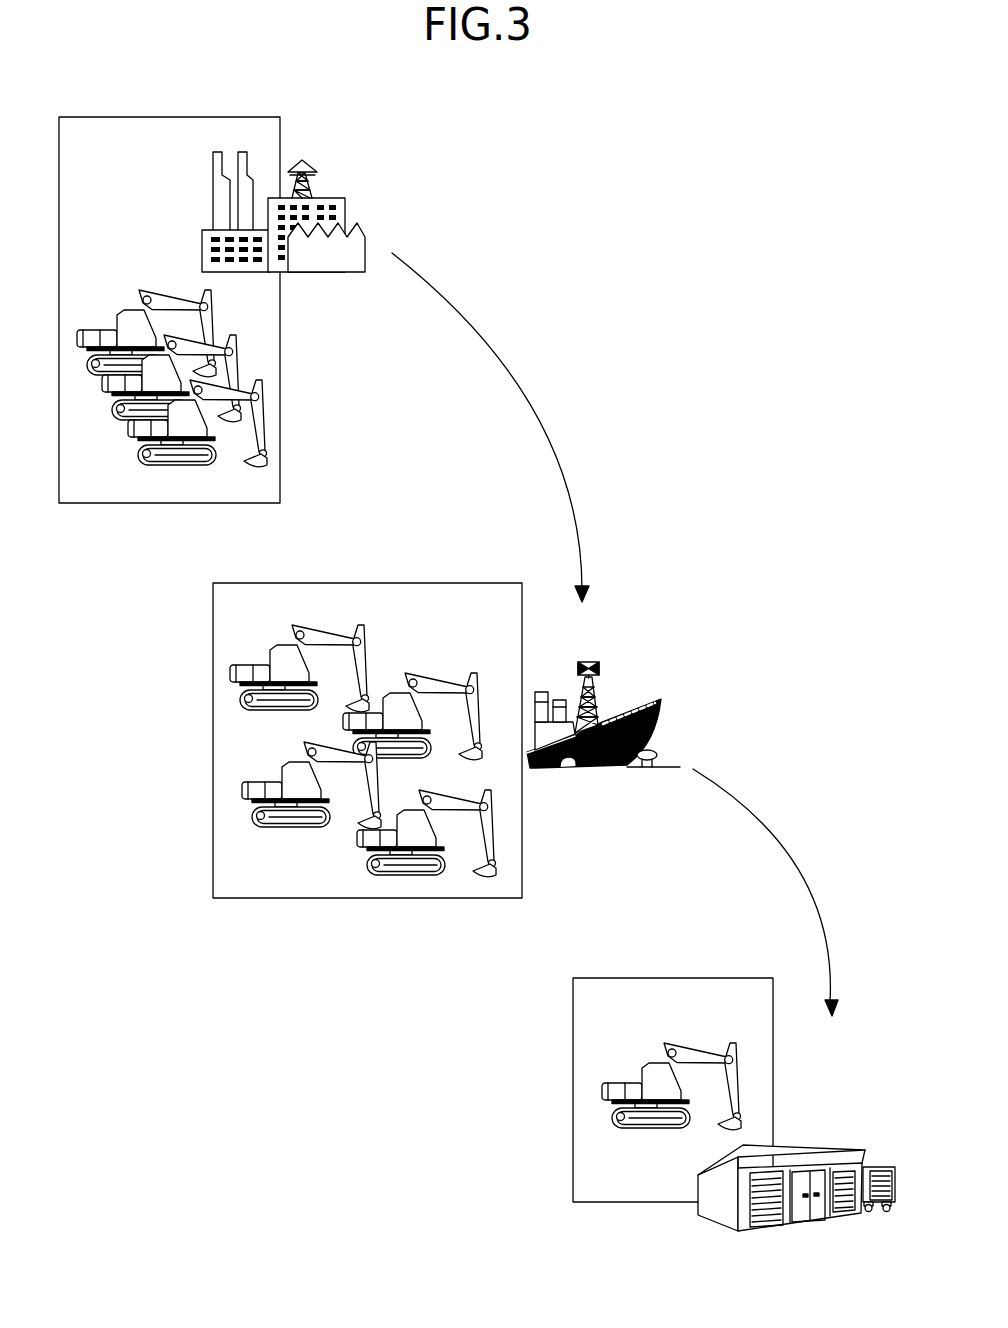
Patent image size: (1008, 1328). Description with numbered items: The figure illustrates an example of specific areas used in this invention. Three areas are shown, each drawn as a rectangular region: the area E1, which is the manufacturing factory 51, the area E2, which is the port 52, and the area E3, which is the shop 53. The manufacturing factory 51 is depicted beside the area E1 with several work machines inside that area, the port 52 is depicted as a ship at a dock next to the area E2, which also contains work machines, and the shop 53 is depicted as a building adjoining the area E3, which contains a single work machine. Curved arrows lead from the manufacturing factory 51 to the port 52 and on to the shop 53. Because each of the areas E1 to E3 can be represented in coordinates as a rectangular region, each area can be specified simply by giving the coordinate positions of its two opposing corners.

The manufacturing factory 51 is at (331, 196).
The port 52 is at (617, 663).
The shop 53 is at (810, 1129).
The area E1 is at (219, 117).
The area E2 is at (422, 583).
The area E3 is at (707, 978).